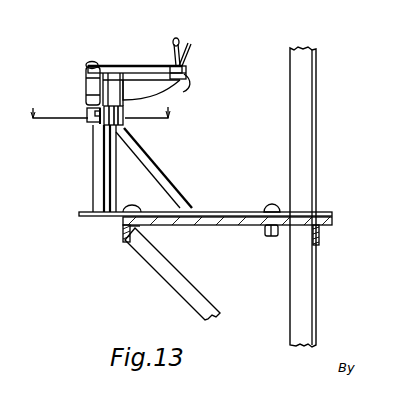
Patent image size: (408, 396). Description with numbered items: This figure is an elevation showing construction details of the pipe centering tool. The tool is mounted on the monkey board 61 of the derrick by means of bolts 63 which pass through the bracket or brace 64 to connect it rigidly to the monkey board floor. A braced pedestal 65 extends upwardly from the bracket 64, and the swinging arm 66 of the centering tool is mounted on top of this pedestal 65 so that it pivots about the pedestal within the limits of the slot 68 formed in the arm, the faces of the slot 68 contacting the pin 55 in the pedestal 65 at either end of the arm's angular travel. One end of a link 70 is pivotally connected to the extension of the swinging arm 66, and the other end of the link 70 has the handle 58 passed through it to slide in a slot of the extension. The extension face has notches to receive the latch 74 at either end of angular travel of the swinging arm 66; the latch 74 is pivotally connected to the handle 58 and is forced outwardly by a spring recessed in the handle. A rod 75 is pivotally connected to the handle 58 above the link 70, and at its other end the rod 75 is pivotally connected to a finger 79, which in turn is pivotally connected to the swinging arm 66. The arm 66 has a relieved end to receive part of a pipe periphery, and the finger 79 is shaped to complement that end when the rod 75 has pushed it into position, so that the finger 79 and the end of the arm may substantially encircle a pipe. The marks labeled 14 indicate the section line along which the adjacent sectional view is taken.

The section line 14- 14 is at (101, 105).
The pin 55 is at (101, 122).
The handle 58 is at (173, 50).
The monkey board 61 is at (247, 226).
The bolts 63 is at (240, 212).
The bracket 64 is at (203, 212).
The braced pedestal 65 is at (100, 180).
The swinging arm 66 is at (124, 114).
The slot 68 is at (88, 118).
The link 70 is at (183, 92).
The latch 74 is at (184, 68).
The rod 75 is at (133, 66).
The finger 79 is at (90, 92).